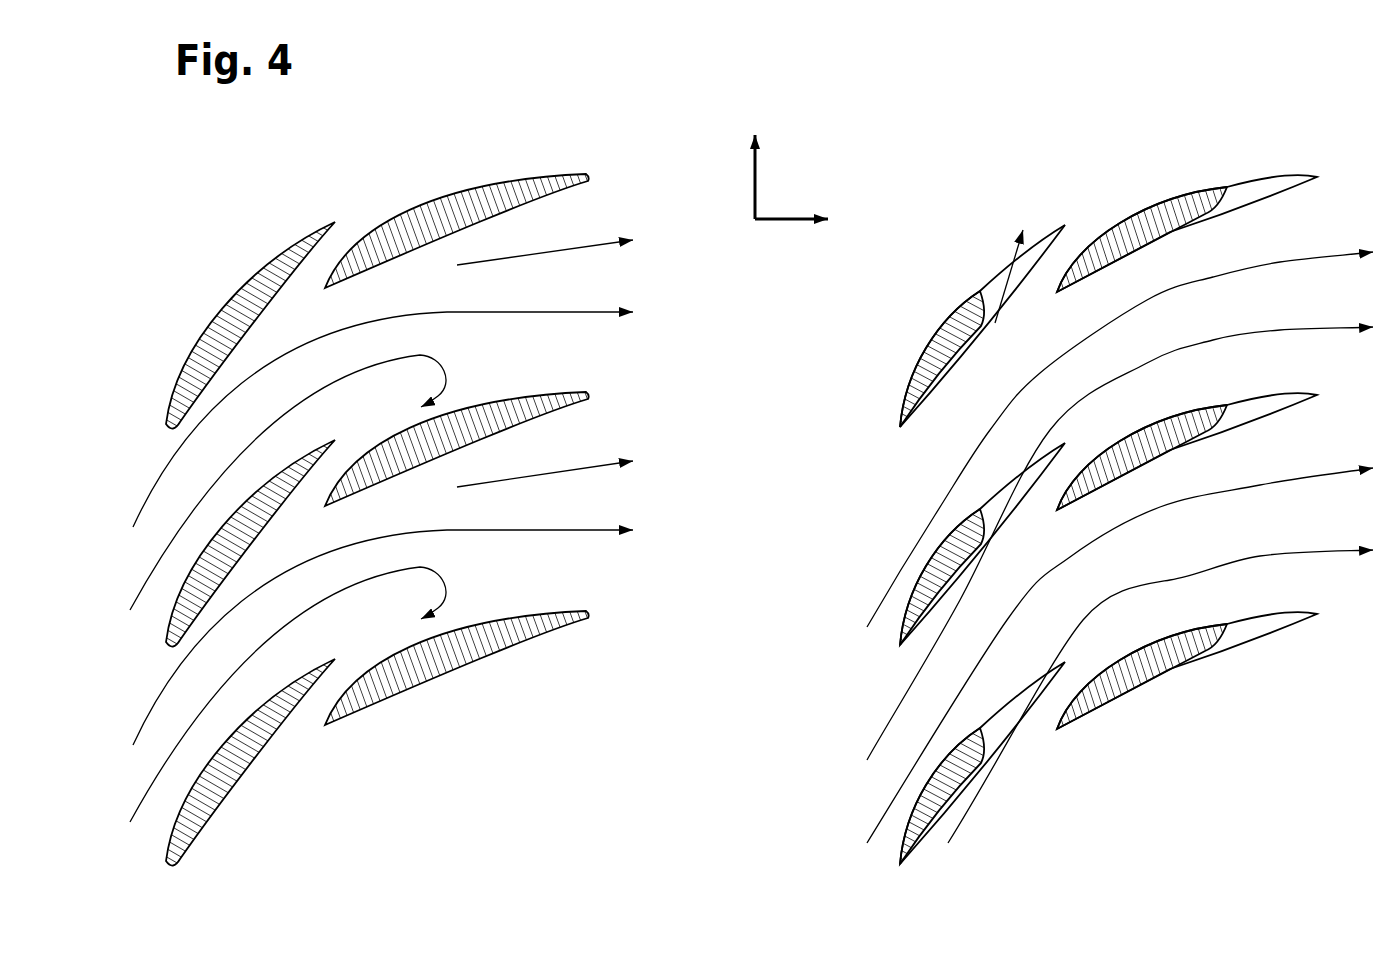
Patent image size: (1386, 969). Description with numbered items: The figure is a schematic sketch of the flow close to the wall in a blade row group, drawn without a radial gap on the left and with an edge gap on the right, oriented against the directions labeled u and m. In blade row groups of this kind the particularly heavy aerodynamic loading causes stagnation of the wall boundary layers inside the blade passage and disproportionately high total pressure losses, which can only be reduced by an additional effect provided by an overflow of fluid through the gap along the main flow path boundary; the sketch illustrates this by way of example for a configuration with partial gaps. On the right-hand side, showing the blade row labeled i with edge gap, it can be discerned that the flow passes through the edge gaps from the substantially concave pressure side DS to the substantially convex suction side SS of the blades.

The blade row i is at (615, 548).
The suction side SS is at (982, 326).
The pressure side DS is at (982, 326).
The circumferential direction axis u is at (740, 173).
The meridional direction axis m is at (813, 220).